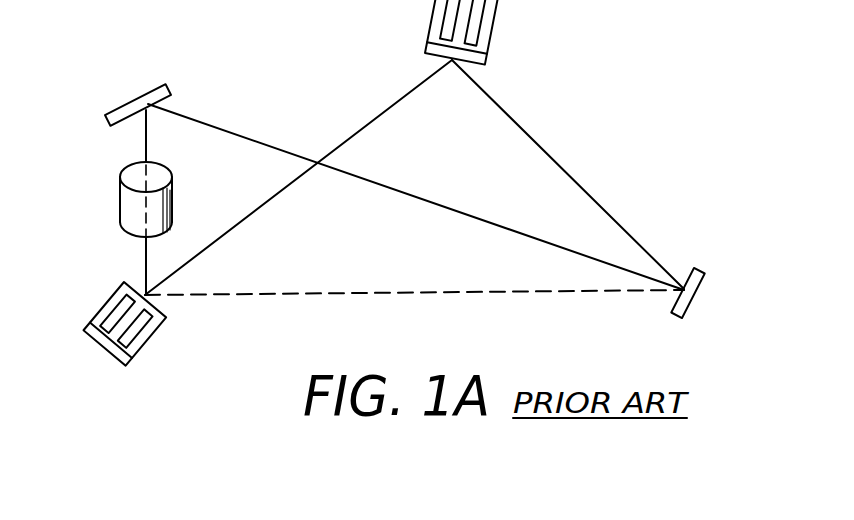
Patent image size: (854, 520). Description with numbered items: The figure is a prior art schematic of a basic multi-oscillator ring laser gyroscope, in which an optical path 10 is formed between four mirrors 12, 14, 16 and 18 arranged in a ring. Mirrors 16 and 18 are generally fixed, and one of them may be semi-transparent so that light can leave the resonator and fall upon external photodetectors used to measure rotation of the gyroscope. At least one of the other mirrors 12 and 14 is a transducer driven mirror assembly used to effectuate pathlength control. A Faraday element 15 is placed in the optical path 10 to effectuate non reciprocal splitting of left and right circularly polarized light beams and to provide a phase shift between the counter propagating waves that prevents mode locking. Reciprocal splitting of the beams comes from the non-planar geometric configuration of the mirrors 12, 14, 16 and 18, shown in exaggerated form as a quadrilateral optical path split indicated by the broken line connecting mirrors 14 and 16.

The optical path 10 is at (595, 193).
The mirror 12 is at (489, 30).
The mirror 14 is at (149, 338).
The Faraday element 15 is at (118, 207).
The mirror 16 is at (675, 318).
The mirror 18 is at (143, 99).